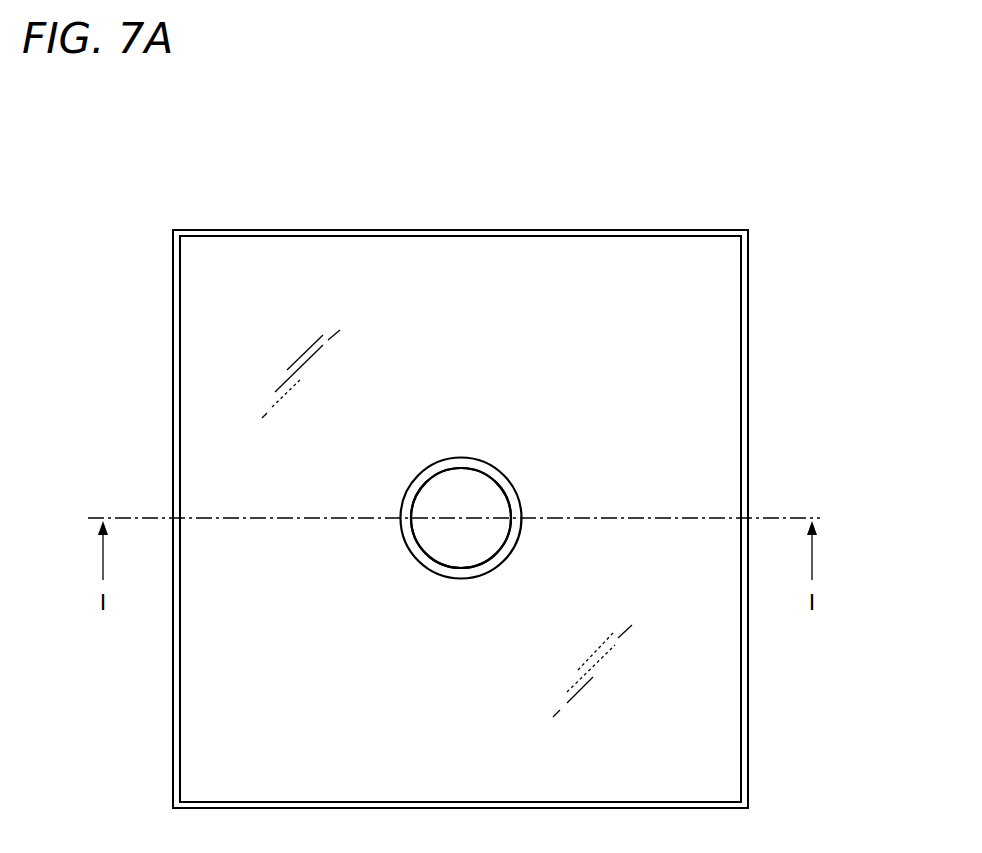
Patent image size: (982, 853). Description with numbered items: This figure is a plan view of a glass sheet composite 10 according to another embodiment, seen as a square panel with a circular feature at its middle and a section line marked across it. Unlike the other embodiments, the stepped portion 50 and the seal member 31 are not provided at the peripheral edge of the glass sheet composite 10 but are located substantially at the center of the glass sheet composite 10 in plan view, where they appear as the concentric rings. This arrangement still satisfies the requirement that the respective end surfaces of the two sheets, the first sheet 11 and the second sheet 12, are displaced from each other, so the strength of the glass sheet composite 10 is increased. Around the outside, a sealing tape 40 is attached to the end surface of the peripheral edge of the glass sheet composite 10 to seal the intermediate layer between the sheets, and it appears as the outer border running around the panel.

The glass sheet composite 10 is at (521, 465).
The first sheet 11 is at (718, 298).
The sealing tape 40 is at (521, 465).
The seal member 31 is at (412, 485).
The stepped portion 50 is at (502, 517).
The second sheet 12 is at (462, 552).